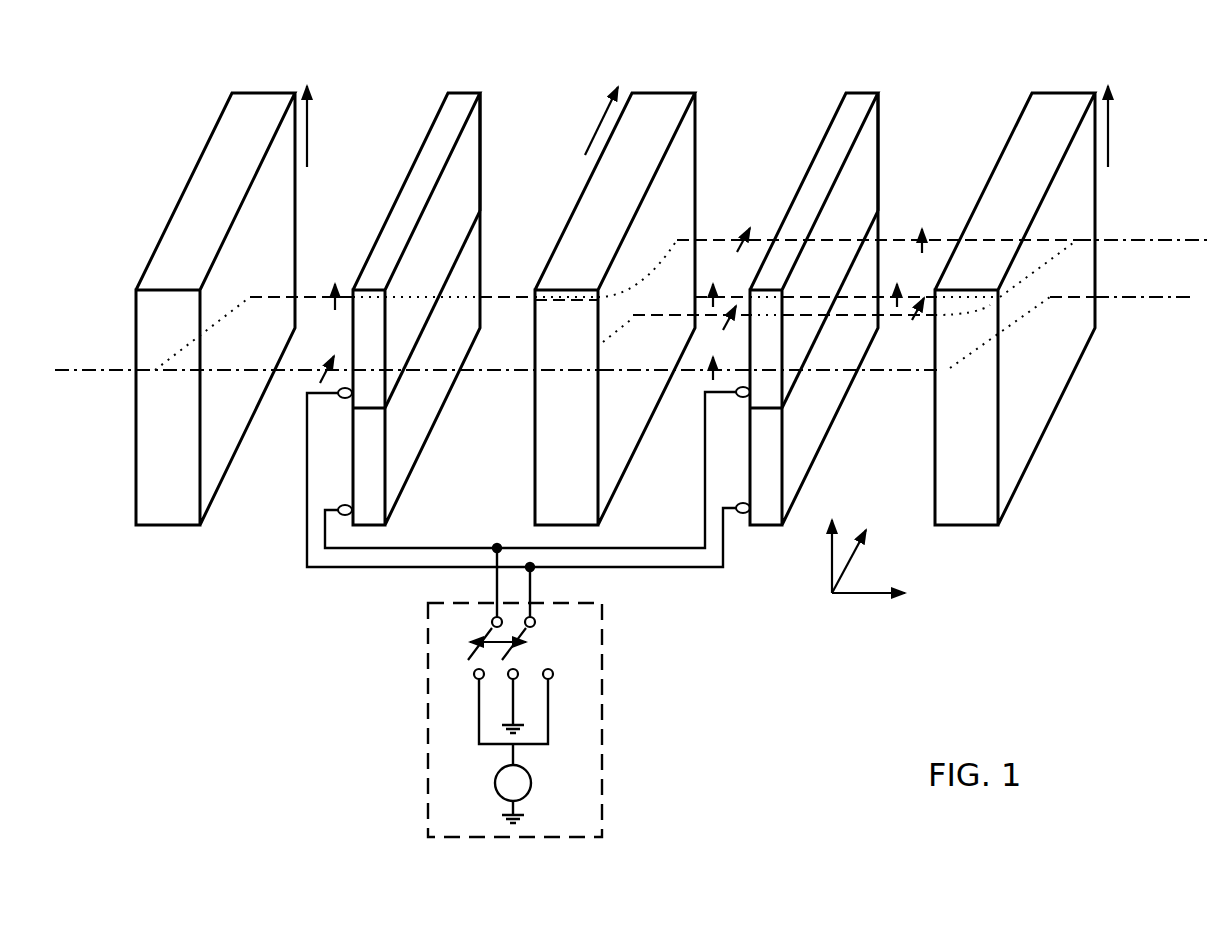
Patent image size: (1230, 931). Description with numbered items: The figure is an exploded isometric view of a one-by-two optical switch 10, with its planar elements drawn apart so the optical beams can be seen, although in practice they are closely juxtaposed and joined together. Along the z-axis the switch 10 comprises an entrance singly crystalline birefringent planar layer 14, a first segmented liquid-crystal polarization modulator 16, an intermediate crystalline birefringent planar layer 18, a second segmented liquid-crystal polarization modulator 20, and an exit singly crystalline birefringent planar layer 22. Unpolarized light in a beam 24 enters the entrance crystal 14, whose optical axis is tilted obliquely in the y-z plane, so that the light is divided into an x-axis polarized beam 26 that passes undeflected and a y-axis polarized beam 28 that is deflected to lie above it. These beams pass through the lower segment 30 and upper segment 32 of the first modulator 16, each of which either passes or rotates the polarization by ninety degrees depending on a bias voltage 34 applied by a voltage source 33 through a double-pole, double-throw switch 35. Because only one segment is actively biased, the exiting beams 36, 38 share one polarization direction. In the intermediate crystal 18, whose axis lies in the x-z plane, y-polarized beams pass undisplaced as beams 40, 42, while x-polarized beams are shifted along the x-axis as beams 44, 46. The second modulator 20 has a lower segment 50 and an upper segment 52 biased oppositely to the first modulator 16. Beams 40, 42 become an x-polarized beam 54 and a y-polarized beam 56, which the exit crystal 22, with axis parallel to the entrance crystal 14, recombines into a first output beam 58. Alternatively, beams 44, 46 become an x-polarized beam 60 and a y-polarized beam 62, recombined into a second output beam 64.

The 1×2 optical switch 10 is at (686, 614).
The entrance singly crystalline birefringent planar layer 14 is at (258, 101).
The first segmented liquid-crystal polarization modulator 16 is at (457, 104).
The intermediate crystalline birefringent planar layer 18 is at (655, 104).
The second segmented liquid-crystal polarization modulator 20 is at (855, 104).
The exit singly crystalline birefringent planar layer 22 is at (1057, 104).
The beam 24 is at (98, 372).
The x-axis polarized beam 26 is at (295, 372).
The y-axis polarized beam 28 is at (312, 287).
The lower segment 30 is at (480, 258).
The upper segment 32 is at (480, 158).
The voltage source 33 is at (602, 730).
The bias voltage 34 is at (532, 783).
The double-pole, double-throw switch 35 is at (490, 635).
The beam 36 is at (495, 372).
The beam 38 is at (520, 287).
The y-polarized beam 40 is at (693, 372).
The y-polarized beam 42 is at (630, 297).
The x-polarized beam 44 is at (683, 318).
The x-polarized beam 46 is at (723, 233).
The lower segment 50 is at (878, 250).
The upper segment 52 is at (878, 157).
The x-polarized beam 54 is at (898, 372).
The y-polarized beam 56 is at (853, 292).
The first output beam 58 is at (1158, 300).
The x-polarized beam 60 is at (893, 320).
The y-polarized beam 62 is at (945, 240).
The second output beam 64 is at (1162, 238).